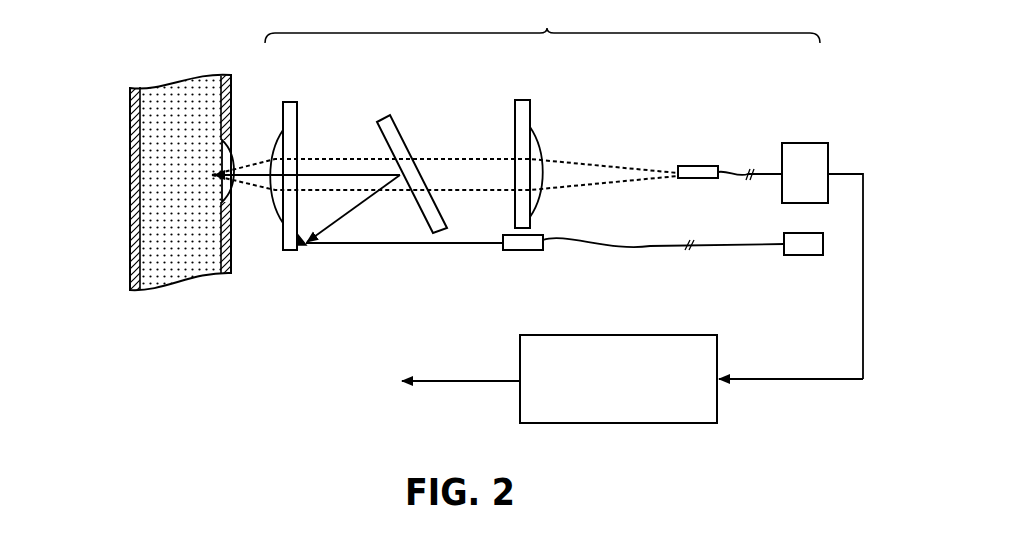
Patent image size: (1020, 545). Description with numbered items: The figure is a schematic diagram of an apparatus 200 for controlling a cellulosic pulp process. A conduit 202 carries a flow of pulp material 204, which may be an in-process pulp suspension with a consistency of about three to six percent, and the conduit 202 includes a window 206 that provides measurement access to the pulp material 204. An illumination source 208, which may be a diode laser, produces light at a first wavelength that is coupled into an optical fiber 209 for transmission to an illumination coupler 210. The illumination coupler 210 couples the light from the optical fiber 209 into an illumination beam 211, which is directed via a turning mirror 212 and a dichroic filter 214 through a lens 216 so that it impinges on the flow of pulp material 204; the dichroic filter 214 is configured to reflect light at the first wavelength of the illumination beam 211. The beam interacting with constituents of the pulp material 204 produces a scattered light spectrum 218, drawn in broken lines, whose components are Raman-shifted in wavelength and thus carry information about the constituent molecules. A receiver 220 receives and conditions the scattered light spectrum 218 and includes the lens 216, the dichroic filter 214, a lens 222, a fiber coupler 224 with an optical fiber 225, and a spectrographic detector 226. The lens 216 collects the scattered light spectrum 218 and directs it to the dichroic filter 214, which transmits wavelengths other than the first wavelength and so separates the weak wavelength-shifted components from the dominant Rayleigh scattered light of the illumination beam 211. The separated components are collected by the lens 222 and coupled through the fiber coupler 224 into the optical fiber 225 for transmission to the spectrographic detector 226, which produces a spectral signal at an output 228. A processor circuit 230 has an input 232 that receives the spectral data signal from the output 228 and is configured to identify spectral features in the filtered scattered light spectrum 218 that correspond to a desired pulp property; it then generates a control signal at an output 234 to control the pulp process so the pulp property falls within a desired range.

The apparatus for controlling a cellulosic pulp process 200 is at (233, 41).
The conduit 202 is at (130, 158).
The pulp material 204 is at (163, 187).
The window 206 is at (232, 152).
The illumination source 208 is at (803, 256).
The optical fiber 209 is at (725, 247).
The illumination coupler 210 is at (522, 251).
The illumination beam 211 is at (408, 245).
The turning mirror 212 is at (310, 248).
The dichroic filter 214 is at (388, 116).
The lens 216 is at (290, 101).
The scattered light spectrum 218 is at (245, 189).
The receiver 220 is at (542, 22).
The lens 222 is at (522, 99).
The fiber coupler 224 is at (698, 165).
The optical fiber 225 is at (742, 173).
The spectrographic detector 226 is at (805, 142).
The output 228 is at (829, 175).
The processor circuit 230 is at (602, 401).
The input 232 is at (722, 376).
The output 234 is at (518, 384).